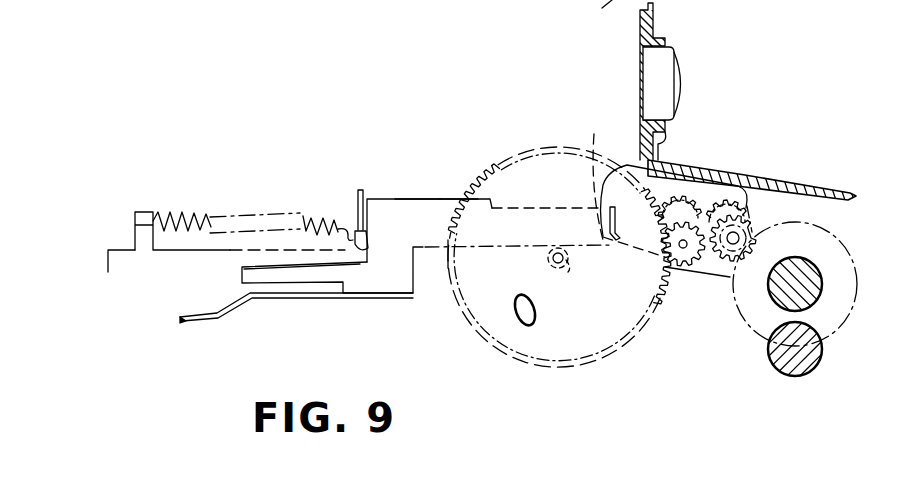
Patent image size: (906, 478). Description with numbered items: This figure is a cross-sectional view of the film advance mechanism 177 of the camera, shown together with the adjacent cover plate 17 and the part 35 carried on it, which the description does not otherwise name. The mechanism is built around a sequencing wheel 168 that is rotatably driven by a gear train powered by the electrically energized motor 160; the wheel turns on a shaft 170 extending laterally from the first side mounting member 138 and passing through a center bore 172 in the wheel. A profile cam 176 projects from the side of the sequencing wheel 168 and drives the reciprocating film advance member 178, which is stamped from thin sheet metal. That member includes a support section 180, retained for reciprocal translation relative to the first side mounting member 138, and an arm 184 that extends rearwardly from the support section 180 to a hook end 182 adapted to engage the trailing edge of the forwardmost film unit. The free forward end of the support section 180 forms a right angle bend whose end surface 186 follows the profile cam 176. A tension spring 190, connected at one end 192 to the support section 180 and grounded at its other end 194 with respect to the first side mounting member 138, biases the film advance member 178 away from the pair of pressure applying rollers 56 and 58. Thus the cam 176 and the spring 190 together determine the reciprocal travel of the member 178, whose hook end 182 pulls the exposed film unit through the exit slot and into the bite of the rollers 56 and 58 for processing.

The cover plate 17 is at (766, 176).
The bumper 35 is at (680, 81).
The pressure applying roller 56 is at (811, 271).
The pressure applying roller 58 is at (781, 350).
The first side mounting member 138 is at (113, 247).
The motor 160 is at (697, 268).
The sequencing wheel 168 is at (456, 274).
The shaft 170 is at (551, 257).
The center bore 172 is at (572, 262).
The profile cam 176 is at (516, 306).
The film advance mechanism 177 is at (385, 192).
The film advance member 178 is at (412, 198).
The support section 180 is at (444, 198).
The hook end 182 is at (184, 320).
The arm 184 is at (240, 296).
The end surface 186 is at (665, 183).
The tension spring 190 is at (316, 222).
The spring connection end 192 is at (370, 244).
The spring ground point 194 is at (150, 219).